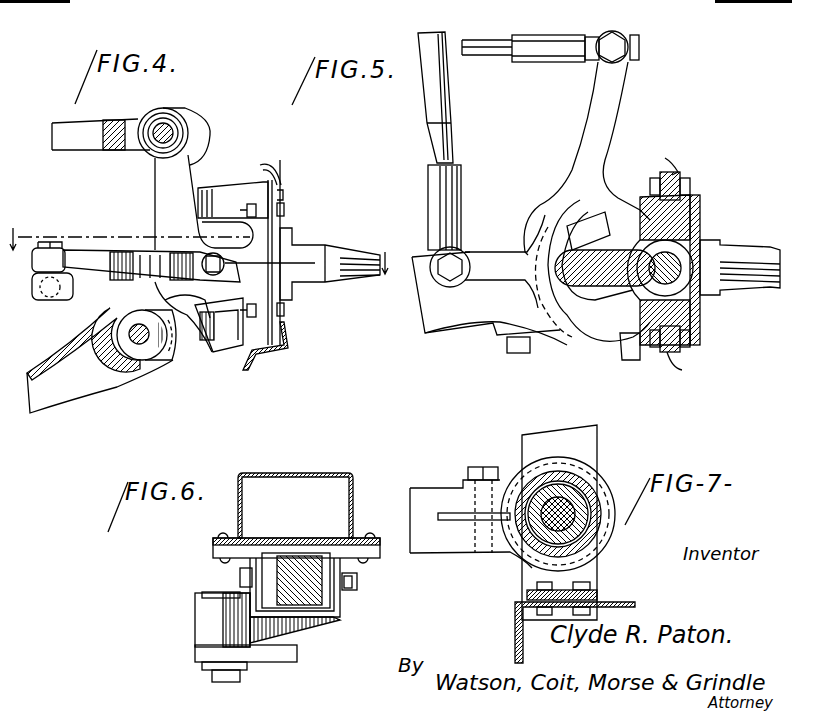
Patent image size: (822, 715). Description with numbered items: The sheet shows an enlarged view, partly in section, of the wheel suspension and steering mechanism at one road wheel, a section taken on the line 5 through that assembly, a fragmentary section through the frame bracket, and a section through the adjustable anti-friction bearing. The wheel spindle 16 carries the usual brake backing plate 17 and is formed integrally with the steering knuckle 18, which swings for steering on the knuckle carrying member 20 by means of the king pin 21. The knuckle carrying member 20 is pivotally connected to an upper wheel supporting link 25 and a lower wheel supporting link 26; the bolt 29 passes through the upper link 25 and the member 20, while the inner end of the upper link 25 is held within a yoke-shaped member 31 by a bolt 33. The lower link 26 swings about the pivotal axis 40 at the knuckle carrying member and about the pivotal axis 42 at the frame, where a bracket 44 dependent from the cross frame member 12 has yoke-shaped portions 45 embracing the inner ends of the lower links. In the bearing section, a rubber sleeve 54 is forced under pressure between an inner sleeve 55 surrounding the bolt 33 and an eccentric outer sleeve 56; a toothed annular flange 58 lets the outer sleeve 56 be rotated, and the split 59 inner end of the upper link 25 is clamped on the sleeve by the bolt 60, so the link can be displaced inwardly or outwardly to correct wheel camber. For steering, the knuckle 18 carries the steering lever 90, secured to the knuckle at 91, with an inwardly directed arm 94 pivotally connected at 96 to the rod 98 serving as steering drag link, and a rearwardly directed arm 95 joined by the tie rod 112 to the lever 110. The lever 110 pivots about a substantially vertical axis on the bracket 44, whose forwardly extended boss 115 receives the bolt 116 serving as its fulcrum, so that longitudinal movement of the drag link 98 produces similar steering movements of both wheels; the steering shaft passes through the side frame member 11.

In FIG. 4, the section line 5— 5 is at (200, 244).
In FIG. 7, the side frame member 11 is at (515, 619).
In FIG. 6, the cross frame member 12 is at (304, 473).
In FIG. 4, the wheel spindle 16 is at (328, 246).
In FIG. 5, the wheel spindle 16 is at (746, 250).
In FIG. 4, the brake backing plate 17 is at (270, 167).
In FIG. 5, the brake backing plate 17 is at (680, 166).
In FIG. 4, the steering knuckle 18 is at (292, 344).
In FIG. 5, the steering knuckle 18 is at (632, 246).
In FIG. 4, the knuckle carrying member 20 is at (207, 232).
In FIG. 5, the knuckle carrying member 20 is at (592, 278).
In FIG. 4, the king pin 21 is at (226, 250).
In FIG. 5, the king pin 21 is at (672, 272).
In FIG. 4, the upper wheel supporting link 25 is at (82, 143).
In FIG. 7, the upper wheel supporting link 25 is at (423, 492).
In FIG. 4, the lower wheel supporting link 26 is at (66, 390).
In FIG. 5, the lower wheel supporting link 26 is at (438, 312).
In FIG. 6, the lower wheel supporting link 26 is at (295, 567).
In FIG. 4, the bolt 29 is at (170, 128).
In FIG. 7, the yoke-shaped member 31 is at (590, 445).
In FIG. 7, the bolt 33 is at (515, 557).
In FIG. 4, the pivotal axis 40 is at (138, 345).
In FIG. 5, the pivotal axis 40 is at (520, 353).
In FIG. 6, the pivotal axis 42 is at (357, 583).
In FIG. 6, the bracket 44 is at (330, 620).
In FIG. 6, the yoke-shaped portions 45 is at (252, 565).
In FIG. 7, the rubber sleeve 54 is at (588, 533).
In FIG. 7, the inner sleeve 55 is at (522, 508).
In FIG. 7, the outer sleeve 56 is at (587, 480).
In FIG. 7, the toothed annular flange 58 is at (512, 473).
In FIG. 7, the split 59 is at (443, 520).
In FIG. 7, the bolt 60 is at (473, 467).
In FIG. 4, the steering lever 90 is at (160, 260).
In FIG. 5, the steering lever 90 is at (572, 192).
In FIG. 4, the securing means 91 is at (286, 206).
In FIG. 5, the securing means 91 is at (690, 190).
In FIG. 4, the inwardly directed arm 94 is at (78, 252).
In FIG. 5, the inwardly directed arm 94 is at (488, 276).
In FIG. 4, the rearwardly directed arm 95 is at (222, 335).
In FIG. 5, the rearwardly directed arm 95 is at (594, 97).
In FIG. 4, the pivotal connection 96 is at (45, 242).
In FIG. 5, the pivotal connection 96 is at (444, 272).
In FIG. 4, the rod 98 is at (40, 300).
In FIG. 5, the rod 98 is at (430, 110).
In FIG. 6, the lever 110 is at (277, 653).
In FIG. 5, the tie rod 112 is at (496, 40).
In FIG. 6, the boss 115 is at (198, 615).
In FIG. 6, the bolt 116 is at (202, 593).